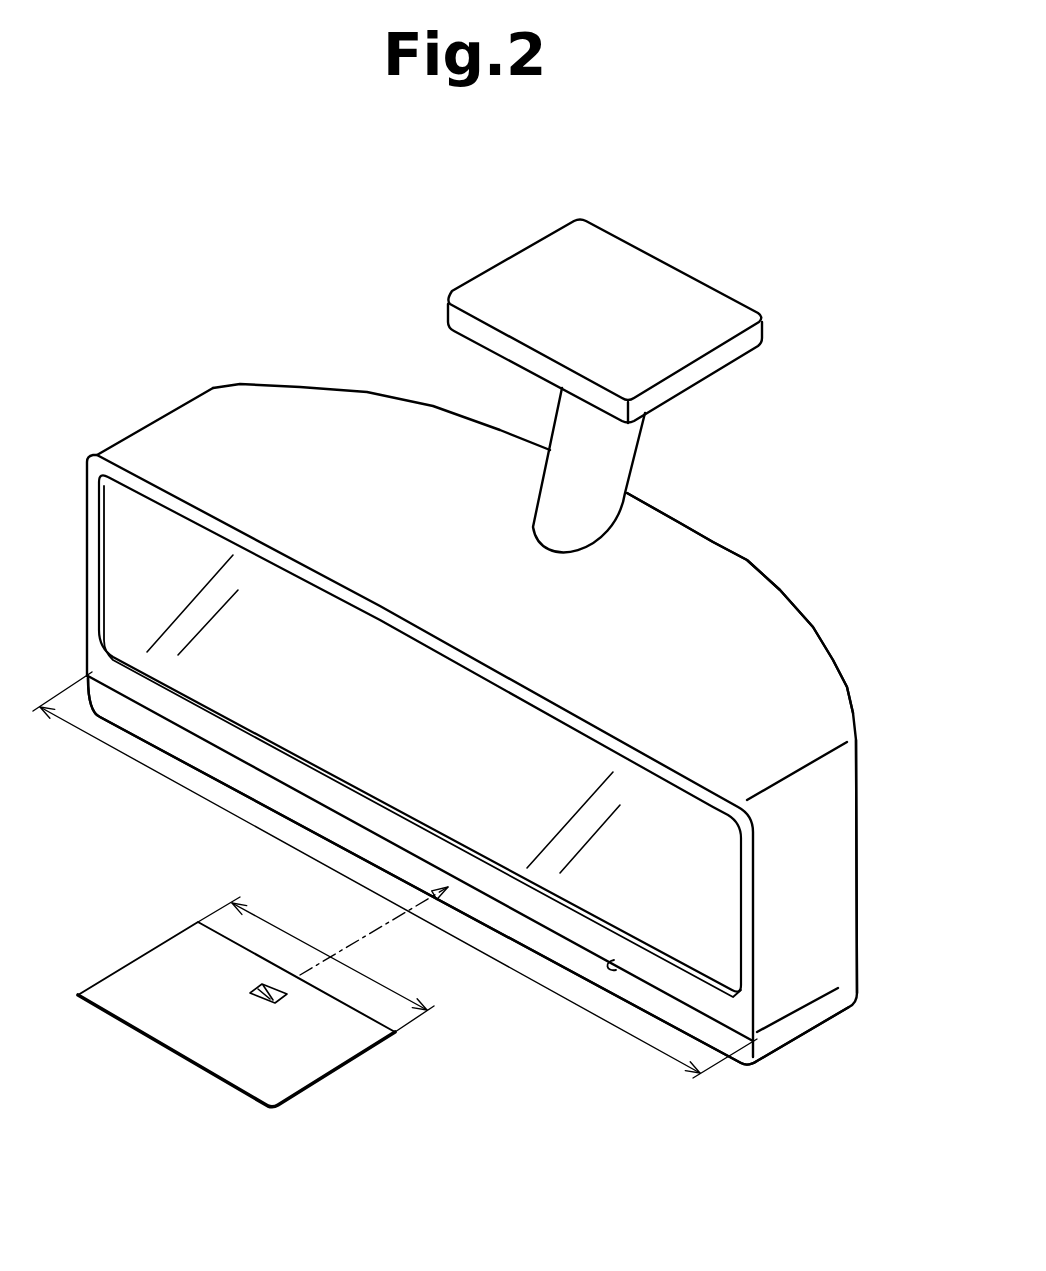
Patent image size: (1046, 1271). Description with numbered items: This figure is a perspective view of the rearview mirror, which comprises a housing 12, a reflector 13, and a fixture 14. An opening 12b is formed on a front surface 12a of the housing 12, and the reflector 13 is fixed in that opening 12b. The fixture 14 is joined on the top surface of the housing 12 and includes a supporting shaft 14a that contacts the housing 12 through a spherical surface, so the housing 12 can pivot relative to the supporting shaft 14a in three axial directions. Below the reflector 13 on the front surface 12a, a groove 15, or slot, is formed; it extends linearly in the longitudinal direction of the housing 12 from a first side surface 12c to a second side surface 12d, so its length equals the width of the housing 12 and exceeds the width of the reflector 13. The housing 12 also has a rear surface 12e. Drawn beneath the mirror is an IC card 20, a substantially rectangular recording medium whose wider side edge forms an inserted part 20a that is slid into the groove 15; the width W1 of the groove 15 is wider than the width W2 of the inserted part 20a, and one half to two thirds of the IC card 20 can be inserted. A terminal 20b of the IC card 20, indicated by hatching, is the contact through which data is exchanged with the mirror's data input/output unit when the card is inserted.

The housing 12 is at (292, 402).
The front surface 12a is at (742, 1008).
The opening 12b is at (150, 505).
The first side surface 12c is at (858, 792).
The second side surface 12d is at (148, 422).
The rear surface 12e is at (720, 545).
The reflector 13 is at (340, 623).
The fixture 14 is at (650, 268).
The supporting shaft 14a is at (636, 452).
The groove 15 is at (620, 968).
The IC card 20 is at (117, 977).
The inserted part 20a is at (377, 1042).
The terminal 20b is at (253, 997).
The width of the groove W1 is at (395, 875).
The width of the inserted part W2 is at (323, 959).